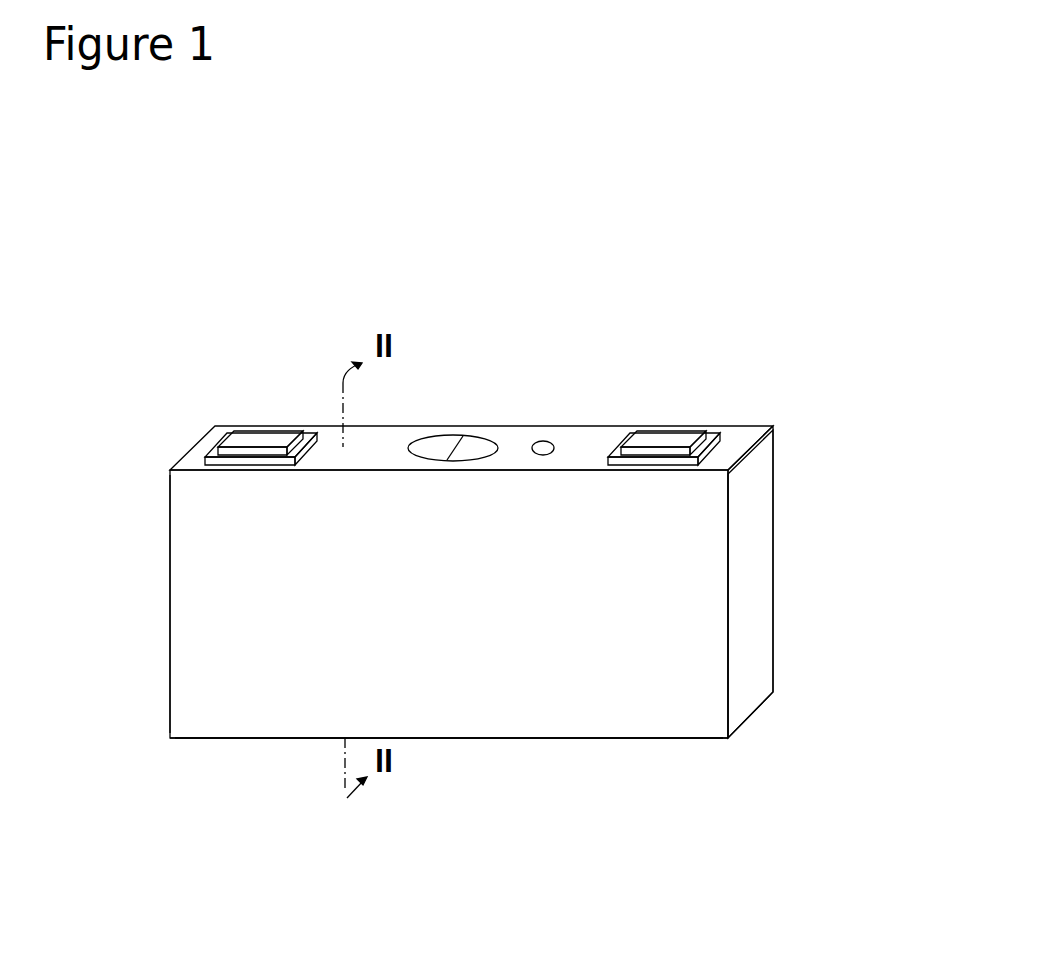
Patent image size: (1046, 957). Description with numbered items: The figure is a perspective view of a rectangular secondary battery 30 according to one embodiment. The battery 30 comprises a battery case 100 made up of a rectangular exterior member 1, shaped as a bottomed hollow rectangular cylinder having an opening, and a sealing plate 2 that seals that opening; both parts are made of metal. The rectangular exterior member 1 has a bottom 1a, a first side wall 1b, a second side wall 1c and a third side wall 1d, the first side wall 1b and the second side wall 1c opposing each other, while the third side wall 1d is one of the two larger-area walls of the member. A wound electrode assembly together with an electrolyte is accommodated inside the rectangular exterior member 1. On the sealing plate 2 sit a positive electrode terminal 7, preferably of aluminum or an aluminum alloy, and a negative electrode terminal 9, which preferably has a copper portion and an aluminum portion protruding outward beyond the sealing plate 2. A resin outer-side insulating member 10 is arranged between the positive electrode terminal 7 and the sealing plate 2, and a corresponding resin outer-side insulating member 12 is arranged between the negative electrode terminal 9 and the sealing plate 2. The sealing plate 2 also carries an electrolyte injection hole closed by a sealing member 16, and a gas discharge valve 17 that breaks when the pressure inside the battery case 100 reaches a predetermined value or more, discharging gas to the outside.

The battery case 100 is at (862, 328).
The rectangular secondary battery 30 is at (201, 291).
The rectangular exterior member 1 is at (760, 508).
The bottom 1a is at (538, 738).
The first side wall 1b is at (750, 568).
The second side wall 1c is at (170, 584).
The third side wall 1d is at (635, 658).
The sealing plate 2 is at (735, 437).
The positive electrode terminal 7 is at (678, 437).
The negative electrode terminal 9 is at (271, 437).
The outer-side insulating member 10 is at (612, 448).
The outer-side insulating member 12 is at (226, 435).
The sealing member 16 is at (547, 445).
The gas discharge valve 17 is at (467, 442).